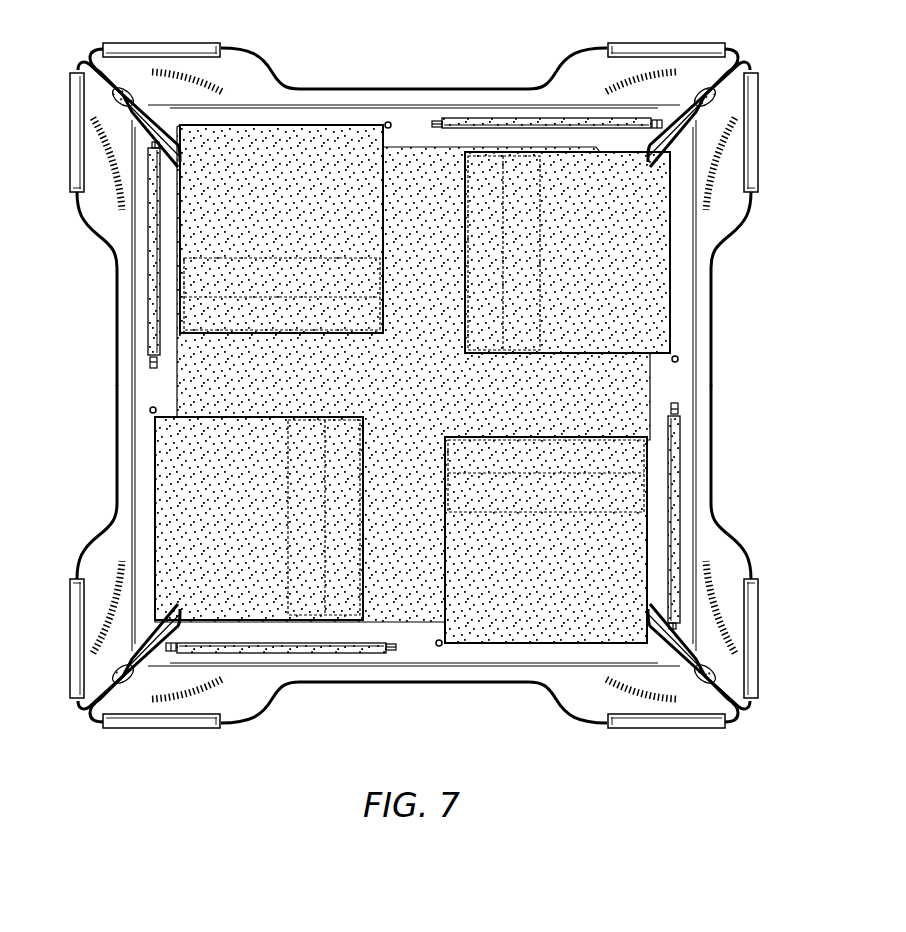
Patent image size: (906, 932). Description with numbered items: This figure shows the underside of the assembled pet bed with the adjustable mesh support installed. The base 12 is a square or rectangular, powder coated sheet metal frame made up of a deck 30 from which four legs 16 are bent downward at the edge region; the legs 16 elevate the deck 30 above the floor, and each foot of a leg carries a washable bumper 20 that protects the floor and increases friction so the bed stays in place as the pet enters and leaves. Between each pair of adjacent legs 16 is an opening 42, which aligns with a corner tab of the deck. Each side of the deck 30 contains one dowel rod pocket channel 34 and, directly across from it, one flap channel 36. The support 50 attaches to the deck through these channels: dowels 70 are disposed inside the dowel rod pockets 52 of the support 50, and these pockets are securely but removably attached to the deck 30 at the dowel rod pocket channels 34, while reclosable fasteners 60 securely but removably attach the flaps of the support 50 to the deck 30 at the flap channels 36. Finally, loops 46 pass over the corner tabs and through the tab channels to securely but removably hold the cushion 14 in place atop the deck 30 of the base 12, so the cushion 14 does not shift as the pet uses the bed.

The base 12 is at (403, 651).
The cushion 14 is at (127, 92).
The leg 16 is at (405, 92).
The bumper 20 is at (75, 138).
The deck 30 is at (143, 392).
The dowel rod pocket channel 34 is at (598, 122).
The flap channel 36 is at (387, 121).
The opening 42 is at (105, 75).
The loop 46 is at (157, 117).
The support 50 is at (403, 392).
The dowel rod pocket 52 is at (515, 124).
The reclosable fastener 60 is at (487, 173).
The dowel 70 is at (435, 122).